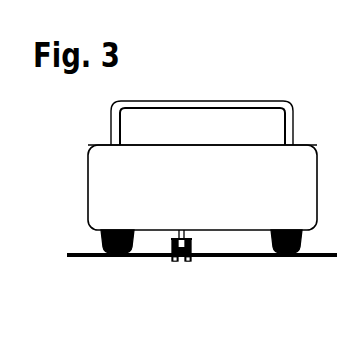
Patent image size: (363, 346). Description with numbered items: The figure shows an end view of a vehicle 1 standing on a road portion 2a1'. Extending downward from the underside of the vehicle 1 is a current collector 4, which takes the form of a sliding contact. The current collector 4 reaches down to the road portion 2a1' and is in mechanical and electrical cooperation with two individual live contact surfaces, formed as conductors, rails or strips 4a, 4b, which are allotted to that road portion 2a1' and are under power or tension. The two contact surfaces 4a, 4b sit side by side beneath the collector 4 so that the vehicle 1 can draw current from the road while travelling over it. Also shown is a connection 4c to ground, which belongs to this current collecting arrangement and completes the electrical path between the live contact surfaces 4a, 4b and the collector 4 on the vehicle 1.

The vehicle 1 is at (108, 168).
The current collector 4 is at (144, 253).
The contact surface 4a is at (188, 262).
The contact surface 4b is at (175, 262).
The connection to ground 4c is at (170, 252).
The road portion 2a1' is at (202, 273).